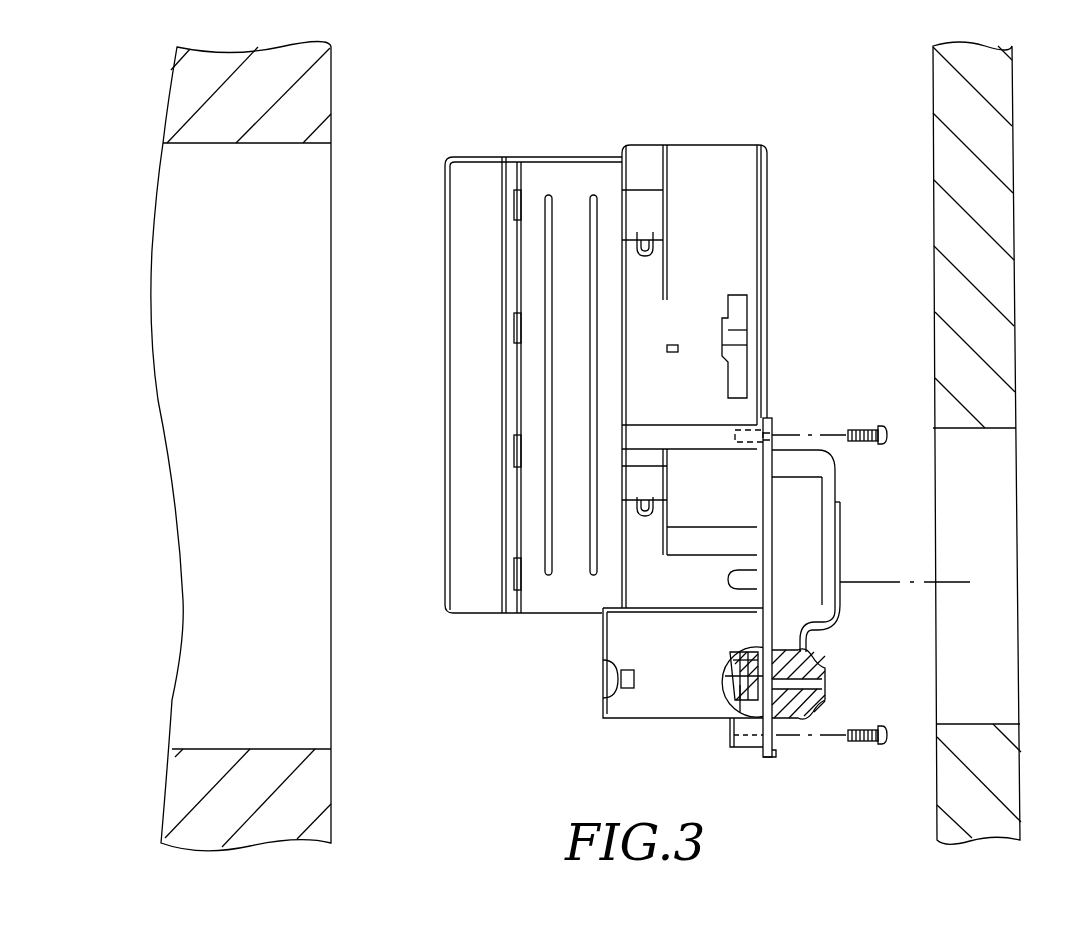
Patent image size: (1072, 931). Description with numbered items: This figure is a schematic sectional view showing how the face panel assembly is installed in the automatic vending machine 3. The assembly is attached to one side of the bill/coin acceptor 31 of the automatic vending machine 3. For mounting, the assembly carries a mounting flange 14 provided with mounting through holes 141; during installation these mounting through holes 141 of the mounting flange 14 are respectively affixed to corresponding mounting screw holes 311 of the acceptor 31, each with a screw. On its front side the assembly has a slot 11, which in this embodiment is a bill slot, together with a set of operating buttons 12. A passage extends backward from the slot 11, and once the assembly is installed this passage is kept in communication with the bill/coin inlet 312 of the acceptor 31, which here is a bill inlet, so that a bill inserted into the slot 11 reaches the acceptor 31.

The automatic vending machine 3 is at (323, 100).
The acceptor 31 is at (700, 150).
The mounting screw holes 311 is at (745, 749).
The bill/coin inlet 312 is at (727, 688).
The mounting flange 14 is at (772, 420).
The mounting through holes 141 is at (776, 428).
The operating buttons 12 is at (830, 478).
The slot 11 is at (825, 688).